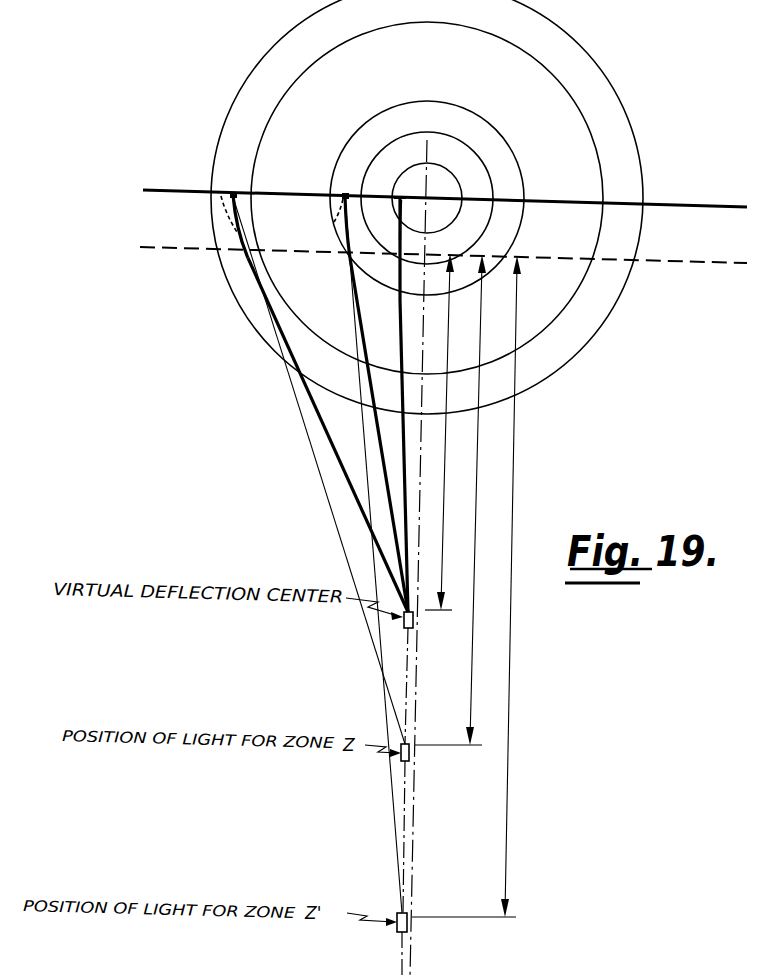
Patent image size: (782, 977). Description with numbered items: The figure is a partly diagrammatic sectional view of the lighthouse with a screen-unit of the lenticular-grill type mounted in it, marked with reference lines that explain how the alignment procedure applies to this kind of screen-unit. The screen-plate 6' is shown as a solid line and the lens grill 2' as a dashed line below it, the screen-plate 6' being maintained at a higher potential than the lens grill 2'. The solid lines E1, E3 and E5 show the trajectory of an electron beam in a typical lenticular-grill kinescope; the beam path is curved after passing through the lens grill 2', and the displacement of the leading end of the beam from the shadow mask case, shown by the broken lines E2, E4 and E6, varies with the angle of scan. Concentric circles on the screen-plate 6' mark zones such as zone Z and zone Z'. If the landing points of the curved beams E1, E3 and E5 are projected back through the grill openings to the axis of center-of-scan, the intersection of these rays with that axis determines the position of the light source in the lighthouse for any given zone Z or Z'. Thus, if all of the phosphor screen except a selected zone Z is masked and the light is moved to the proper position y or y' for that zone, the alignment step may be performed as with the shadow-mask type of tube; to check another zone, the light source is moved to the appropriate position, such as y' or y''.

The zone Z is at (427, 207).
The zone Z' is at (427, 198).
The screen-plate 6' is at (445, 191).
The lens grill 2' is at (443, 243).
The solid line E1 is at (234, 206).
The broken line E2 is at (225, 198).
The solid line E3 is at (356, 202).
The broken line E4 is at (341, 205).
The solid line E5 is at (404, 208).
The broken line E6 is at (397, 205).
The position y is at (439, 432).
The position y' is at (451, 500).
The position y'' is at (469, 586).